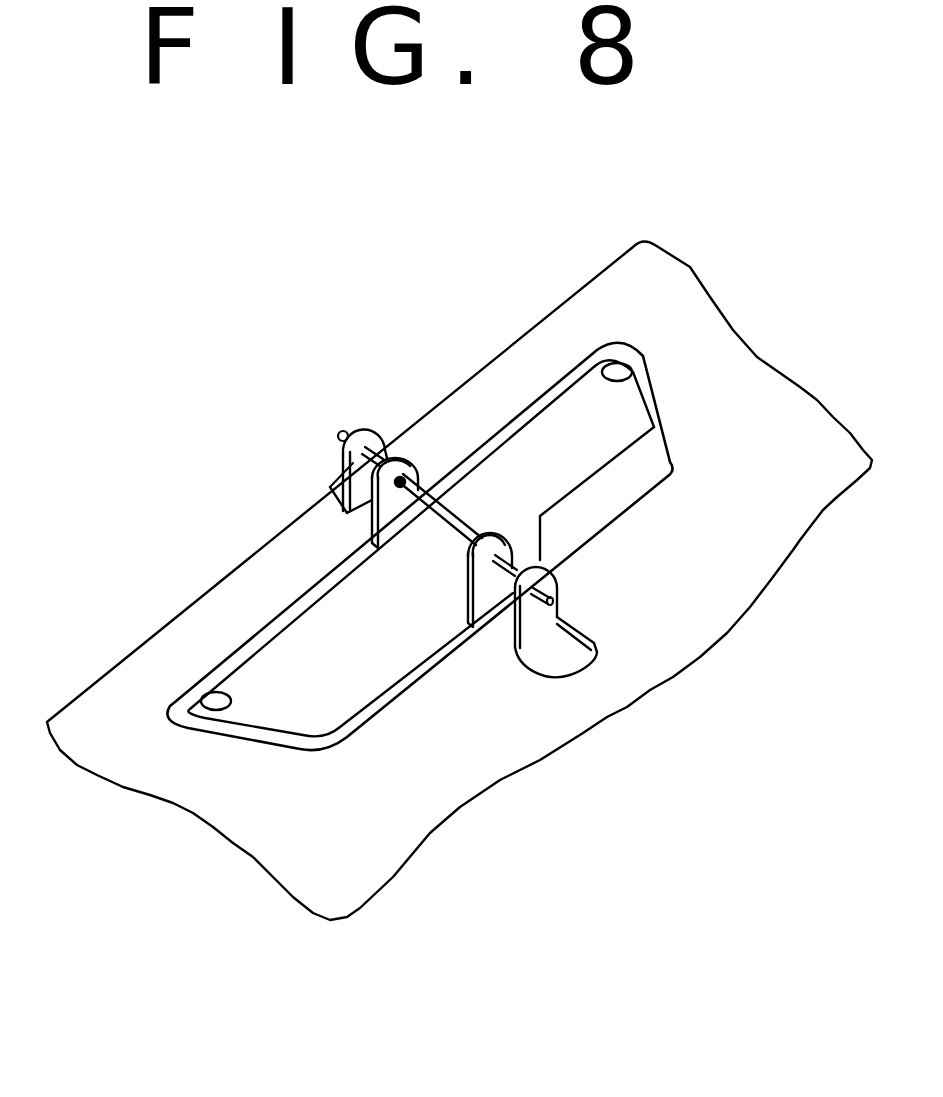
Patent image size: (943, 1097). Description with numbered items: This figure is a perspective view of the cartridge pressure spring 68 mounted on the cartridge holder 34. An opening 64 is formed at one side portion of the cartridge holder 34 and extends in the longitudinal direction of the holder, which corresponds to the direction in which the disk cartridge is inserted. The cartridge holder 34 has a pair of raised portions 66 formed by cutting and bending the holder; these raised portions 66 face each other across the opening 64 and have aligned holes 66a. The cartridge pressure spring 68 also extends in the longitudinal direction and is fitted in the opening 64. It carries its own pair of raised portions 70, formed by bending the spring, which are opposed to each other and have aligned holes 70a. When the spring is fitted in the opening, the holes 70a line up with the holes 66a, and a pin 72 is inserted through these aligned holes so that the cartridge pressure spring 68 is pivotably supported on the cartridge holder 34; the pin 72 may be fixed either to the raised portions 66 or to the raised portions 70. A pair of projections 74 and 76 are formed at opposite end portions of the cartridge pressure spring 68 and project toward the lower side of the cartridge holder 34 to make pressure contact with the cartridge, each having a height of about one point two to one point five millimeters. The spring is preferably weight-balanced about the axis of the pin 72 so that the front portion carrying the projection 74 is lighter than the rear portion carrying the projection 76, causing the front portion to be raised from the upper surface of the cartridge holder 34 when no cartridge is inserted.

The cartridge holder 34 is at (698, 338).
The opening 64 is at (647, 463).
The cartridge pressure spring 68 is at (540, 463).
The projection 74 is at (610, 367).
The projection 76 is at (222, 705).
The raised portions 70 is at (409, 462).
The holes 70a is at (330, 487).
The pin 72 is at (443, 527).
The raised portions 66 is at (340, 462).
The holes 66a is at (367, 430).